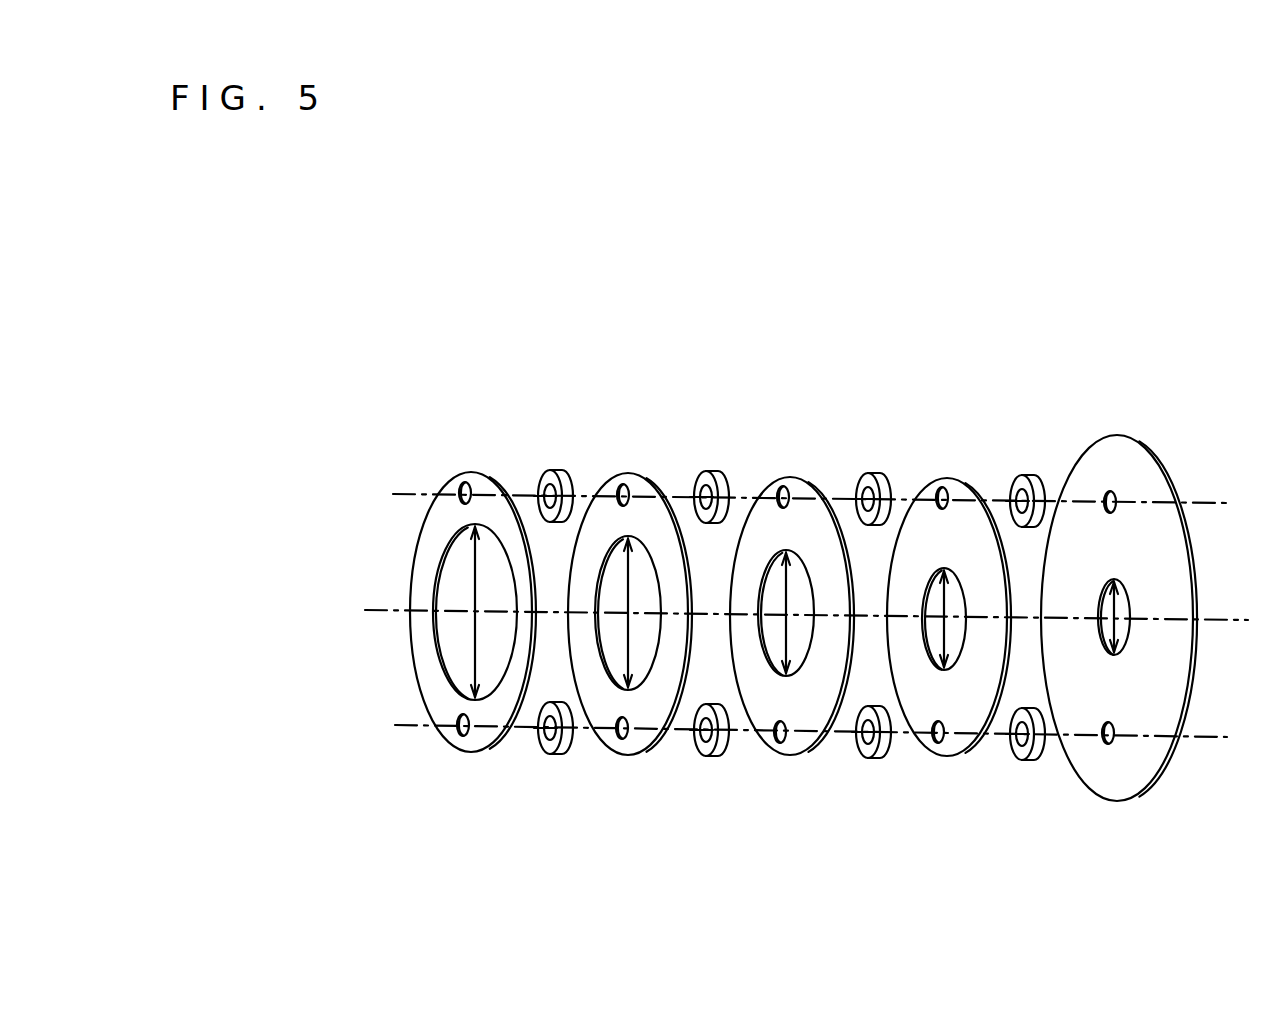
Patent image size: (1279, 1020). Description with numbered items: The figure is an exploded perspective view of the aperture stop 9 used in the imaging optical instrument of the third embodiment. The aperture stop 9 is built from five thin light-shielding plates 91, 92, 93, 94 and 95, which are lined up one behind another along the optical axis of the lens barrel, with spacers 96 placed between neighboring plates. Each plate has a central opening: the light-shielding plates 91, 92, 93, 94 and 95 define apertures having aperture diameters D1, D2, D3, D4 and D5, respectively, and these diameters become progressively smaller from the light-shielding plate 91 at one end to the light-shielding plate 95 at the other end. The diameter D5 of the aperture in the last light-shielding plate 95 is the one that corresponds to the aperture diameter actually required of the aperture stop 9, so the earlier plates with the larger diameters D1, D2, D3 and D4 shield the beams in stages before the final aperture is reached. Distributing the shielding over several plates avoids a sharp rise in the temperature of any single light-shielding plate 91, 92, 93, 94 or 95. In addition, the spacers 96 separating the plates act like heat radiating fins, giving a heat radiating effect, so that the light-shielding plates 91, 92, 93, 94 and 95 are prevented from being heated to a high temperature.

The aperture stop 9 is at (835, 390).
The light-shielding plate 91 is at (481, 750).
The light-shielding plate 92 is at (639, 752).
The light-shielding plate 93 is at (801, 752).
The light-shielding plate 94 is at (956, 752).
The light-shielding plate 95 is at (1125, 780).
The spacer 96 is at (558, 470).
The aperture diameter D1 is at (472, 588).
The aperture diameter D2 is at (630, 603).
The aperture diameter D3 is at (787, 603).
The aperture diameter D4 is at (943, 605).
The aperture diameter D5 is at (1115, 610).